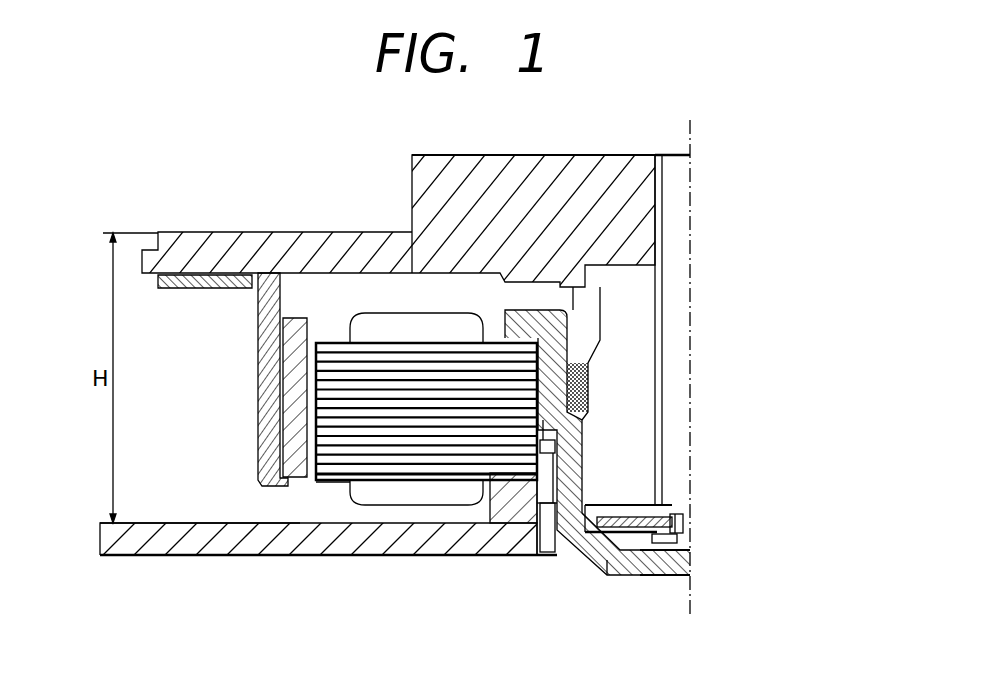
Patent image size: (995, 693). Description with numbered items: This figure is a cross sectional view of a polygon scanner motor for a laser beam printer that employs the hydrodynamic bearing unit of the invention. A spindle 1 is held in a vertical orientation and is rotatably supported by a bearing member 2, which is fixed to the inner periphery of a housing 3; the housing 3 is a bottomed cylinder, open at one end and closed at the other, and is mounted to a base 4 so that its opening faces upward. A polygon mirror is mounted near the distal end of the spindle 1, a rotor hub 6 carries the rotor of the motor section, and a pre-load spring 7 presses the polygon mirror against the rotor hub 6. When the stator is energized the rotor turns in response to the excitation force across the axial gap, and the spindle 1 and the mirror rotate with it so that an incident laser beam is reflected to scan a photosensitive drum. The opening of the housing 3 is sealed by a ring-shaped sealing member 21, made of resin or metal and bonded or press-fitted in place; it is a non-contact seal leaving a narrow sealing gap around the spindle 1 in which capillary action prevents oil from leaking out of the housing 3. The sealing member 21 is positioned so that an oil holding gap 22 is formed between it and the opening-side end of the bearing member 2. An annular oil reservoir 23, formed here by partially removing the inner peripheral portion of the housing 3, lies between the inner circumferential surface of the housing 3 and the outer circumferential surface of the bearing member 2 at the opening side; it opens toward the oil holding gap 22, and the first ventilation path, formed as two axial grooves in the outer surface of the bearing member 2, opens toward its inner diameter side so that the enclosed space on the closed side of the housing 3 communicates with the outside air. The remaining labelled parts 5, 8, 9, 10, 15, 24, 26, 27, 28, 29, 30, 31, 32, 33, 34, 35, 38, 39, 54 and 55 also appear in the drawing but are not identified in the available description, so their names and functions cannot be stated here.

The spindle 1 is at (678, 238).
The bearing member 2 is at (462, 154).
The housing 3 is at (258, 340).
The base 4 is at (258, 419).
The bobbin base 5 is at (322, 482).
The rotor hub 6 is at (135, 533).
The pre-load spring 7 is at (568, 557).
The bottom flange 8 is at (642, 576).
The chamber 9 is at (610, 453).
The seal member 10 is at (683, 512).
The coil 15 is at (368, 493).
The sealing member 21 is at (455, 335).
The oil holding gap 22 is at (688, 572).
The oil reservoir 23 is at (584, 298).
The flange top surface 24 is at (680, 551).
The step 26 is at (597, 565).
The tab 27 is at (683, 527).
The gasket 28 is at (625, 505).
The recess 29 is at (600, 510).
The sleeve 30 is at (588, 338).
The sleeve wall 31 is at (592, 422).
The terminal 32 is at (520, 518).
The adhesive 33 is at (577, 340).
The lower bobbin flange 34 is at (450, 481).
The top wall 35 is at (643, 200).
The spacer block 38 is at (503, 505).
The lead 39 is at (505, 562).
The base plate top surface 54 is at (160, 523).
The flange 55 is at (265, 249).